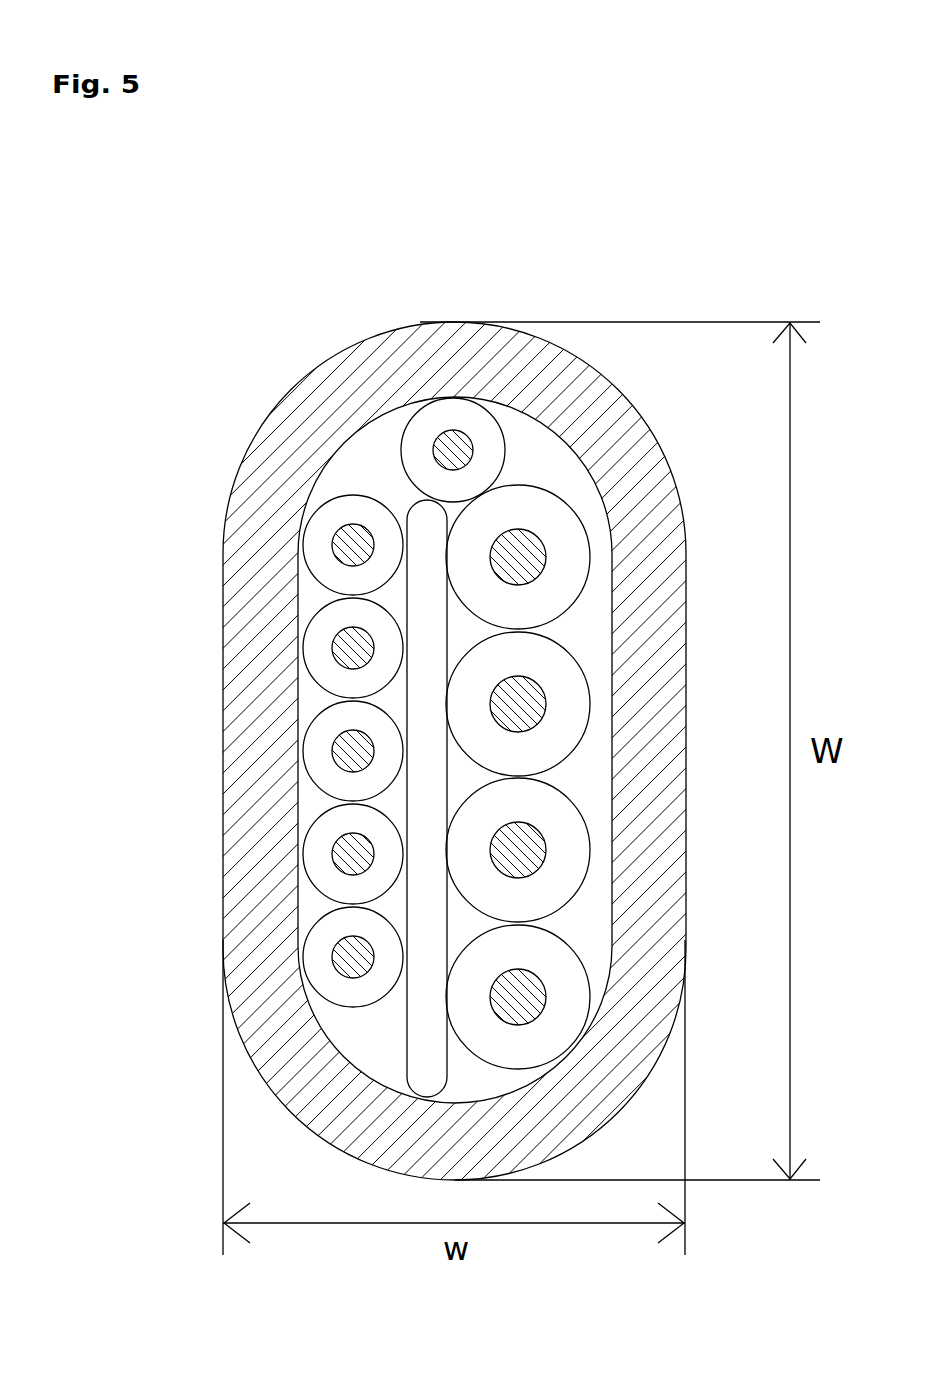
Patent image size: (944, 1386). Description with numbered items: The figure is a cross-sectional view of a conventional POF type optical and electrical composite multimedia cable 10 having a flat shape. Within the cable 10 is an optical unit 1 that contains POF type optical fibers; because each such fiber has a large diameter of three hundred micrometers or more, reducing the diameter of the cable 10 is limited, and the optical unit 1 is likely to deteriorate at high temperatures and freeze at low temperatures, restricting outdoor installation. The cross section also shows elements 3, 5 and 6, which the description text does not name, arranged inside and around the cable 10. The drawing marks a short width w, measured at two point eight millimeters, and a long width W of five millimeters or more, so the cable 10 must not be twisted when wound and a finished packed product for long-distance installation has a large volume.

The optical unit 1 is at (571, 484).
The optical fiber unit (small) 3 is at (312, 721).
The spacer / partition member 5 is at (420, 800).
The outer sheath 6 is at (260, 863).
The optical and electrical composite multimedia cable 10 is at (212, 347).